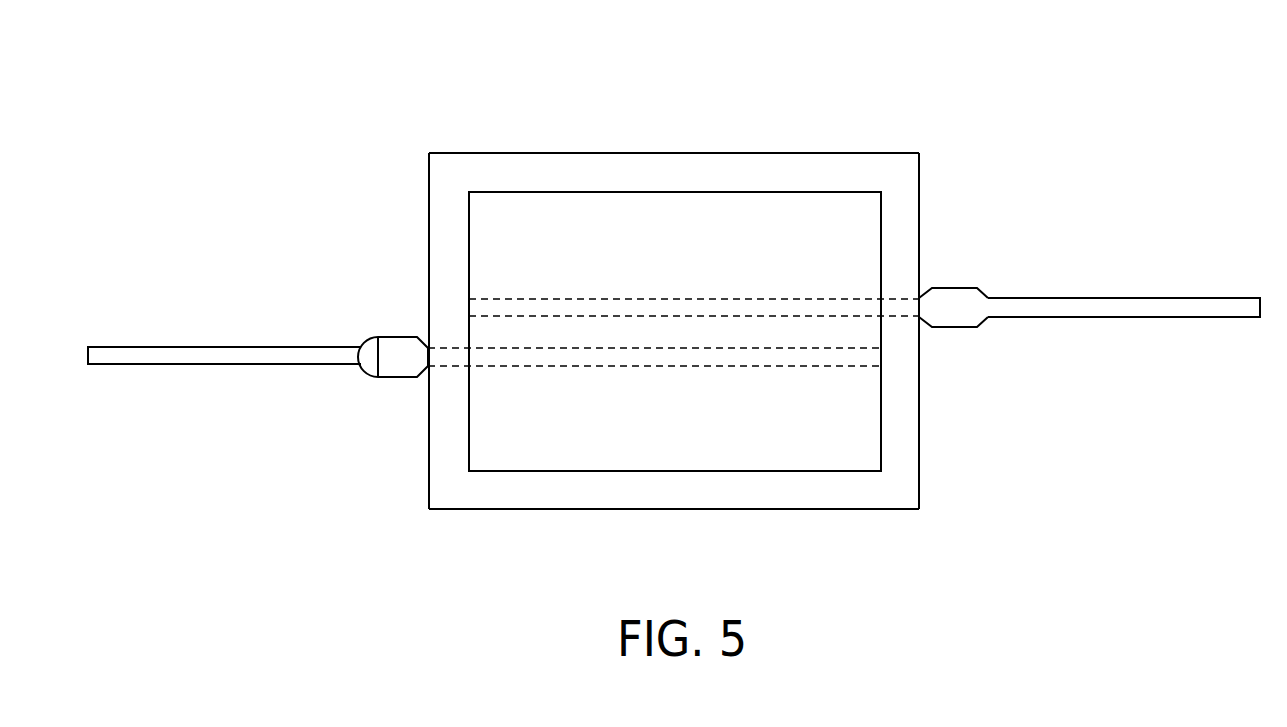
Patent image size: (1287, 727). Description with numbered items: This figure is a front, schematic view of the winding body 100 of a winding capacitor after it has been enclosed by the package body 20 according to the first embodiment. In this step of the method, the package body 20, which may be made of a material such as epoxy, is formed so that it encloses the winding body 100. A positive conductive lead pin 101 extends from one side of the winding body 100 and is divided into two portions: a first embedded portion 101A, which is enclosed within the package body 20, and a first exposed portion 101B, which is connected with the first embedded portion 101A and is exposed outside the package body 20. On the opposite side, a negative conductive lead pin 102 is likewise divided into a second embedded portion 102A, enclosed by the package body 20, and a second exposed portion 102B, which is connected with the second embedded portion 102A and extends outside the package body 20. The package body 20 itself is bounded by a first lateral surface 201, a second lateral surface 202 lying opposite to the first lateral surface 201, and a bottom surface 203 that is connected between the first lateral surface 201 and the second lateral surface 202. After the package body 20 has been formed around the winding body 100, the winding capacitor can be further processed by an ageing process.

The package body 20 is at (882, 93).
The winding body 100 is at (632, 207).
The positive conductive lead pin 101 is at (420, 258).
The first embedded portion 101A is at (447, 355).
The first exposed portion 101B is at (294, 357).
The negative conductive lead pin 102 is at (1062, 212).
The second embedded portion 102A is at (899, 305).
The second exposed portion 102B is at (1057, 310).
The first lateral surface 201 is at (429, 431).
The second lateral surface 202 is at (920, 431).
The bottom surface 203 is at (571, 509).